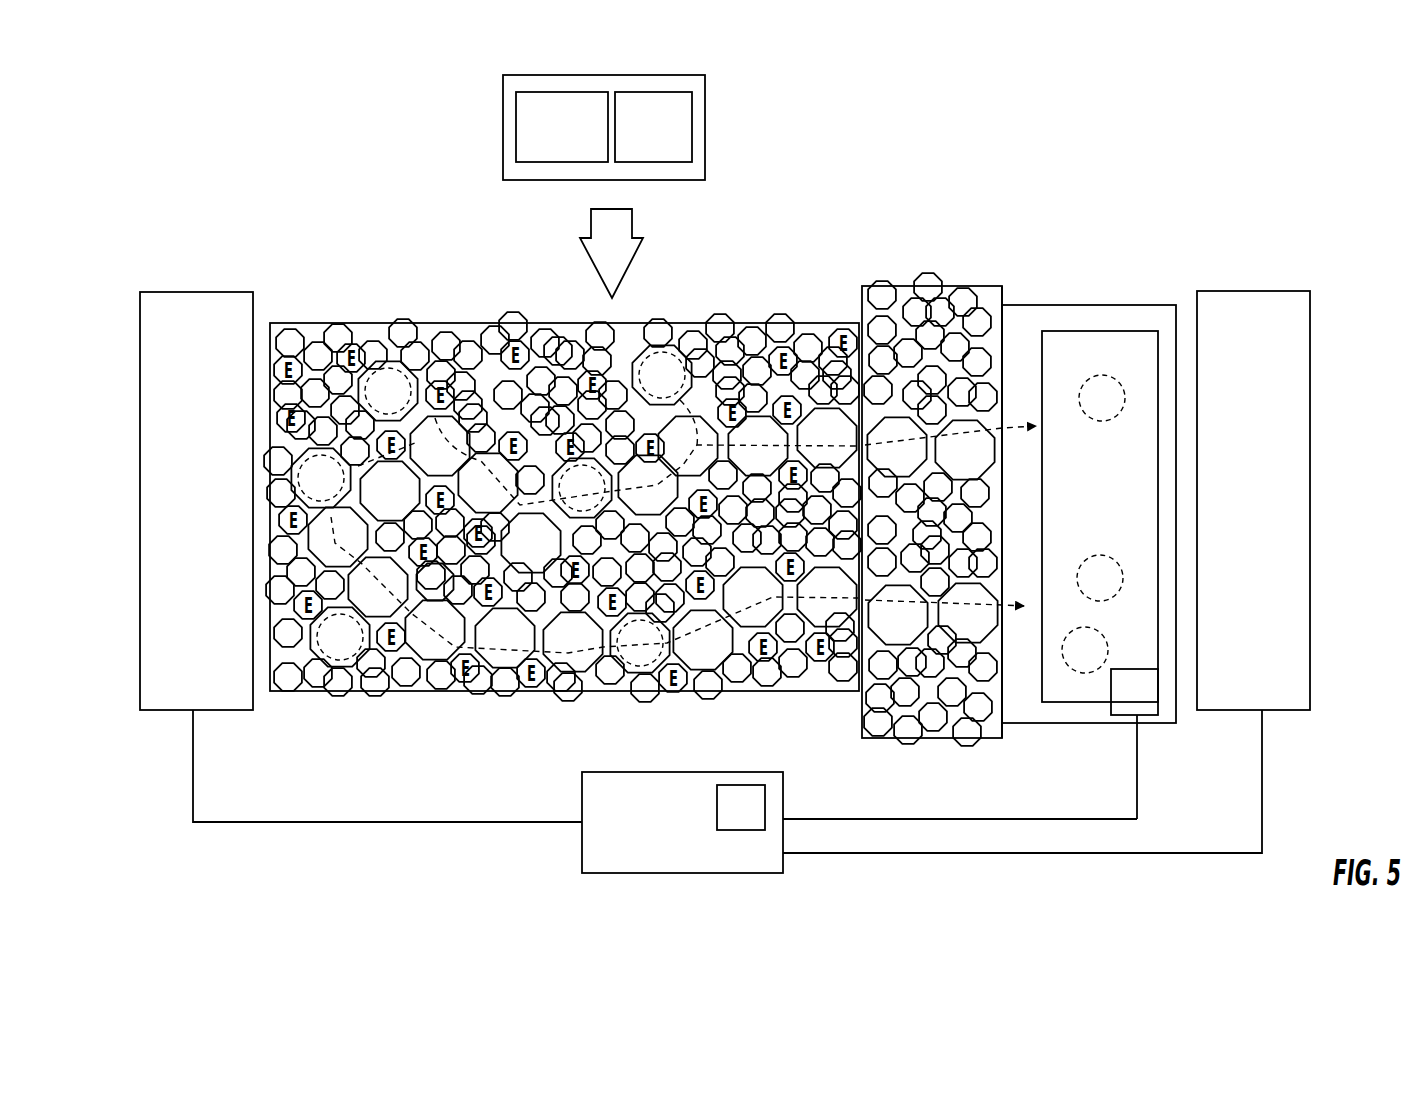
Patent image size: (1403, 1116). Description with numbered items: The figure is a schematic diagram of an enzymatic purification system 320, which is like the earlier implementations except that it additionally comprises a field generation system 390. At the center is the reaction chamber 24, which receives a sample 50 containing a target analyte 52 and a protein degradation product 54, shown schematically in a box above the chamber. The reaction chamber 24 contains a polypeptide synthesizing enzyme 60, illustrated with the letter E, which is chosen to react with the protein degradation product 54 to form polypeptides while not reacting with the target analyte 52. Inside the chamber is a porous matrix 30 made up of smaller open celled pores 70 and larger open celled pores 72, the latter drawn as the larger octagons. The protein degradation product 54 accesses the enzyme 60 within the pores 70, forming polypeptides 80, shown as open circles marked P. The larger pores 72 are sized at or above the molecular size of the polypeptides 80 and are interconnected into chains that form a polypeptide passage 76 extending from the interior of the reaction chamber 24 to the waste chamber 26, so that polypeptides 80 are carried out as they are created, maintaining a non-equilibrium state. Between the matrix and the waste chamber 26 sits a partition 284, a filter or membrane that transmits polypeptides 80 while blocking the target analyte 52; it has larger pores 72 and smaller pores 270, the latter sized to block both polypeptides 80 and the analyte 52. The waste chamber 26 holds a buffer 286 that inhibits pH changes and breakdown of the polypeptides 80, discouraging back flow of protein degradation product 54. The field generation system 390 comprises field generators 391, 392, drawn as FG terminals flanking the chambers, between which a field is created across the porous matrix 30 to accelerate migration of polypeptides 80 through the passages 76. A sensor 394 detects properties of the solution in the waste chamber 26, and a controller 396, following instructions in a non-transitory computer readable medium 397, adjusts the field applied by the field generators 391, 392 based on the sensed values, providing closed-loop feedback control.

The enzymatic purification system 320 is at (106, 176).
The field generation system 390 is at (140, 288).
The field generator 391 is at (140, 565).
The field generator 392 is at (1310, 535).
The sensor 394 is at (1147, 718).
The controller 396 is at (859, 847).
The non-transitory computer readable medium 397 is at (767, 805).
The sample 50 is at (560, 101).
The target analyte 52 is at (572, 92).
The protein degradation product 54 is at (678, 92).
The reaction chamber 24 is at (282, 322).
The porous matrix 30 is at (403, 320).
The open celled pores 72 is at (428, 365).
The polypeptide passage 76 is at (386, 368).
The polypeptide synthesizing enzyme 60 is at (597, 383).
The open celled pores 70 is at (335, 696).
The polypeptides 80 is at (320, 657).
The smaller pores 270 is at (885, 290).
The partition 284 is at (995, 290).
The buffer 286 is at (1123, 331).
The waste chamber 26 is at (1103, 513).